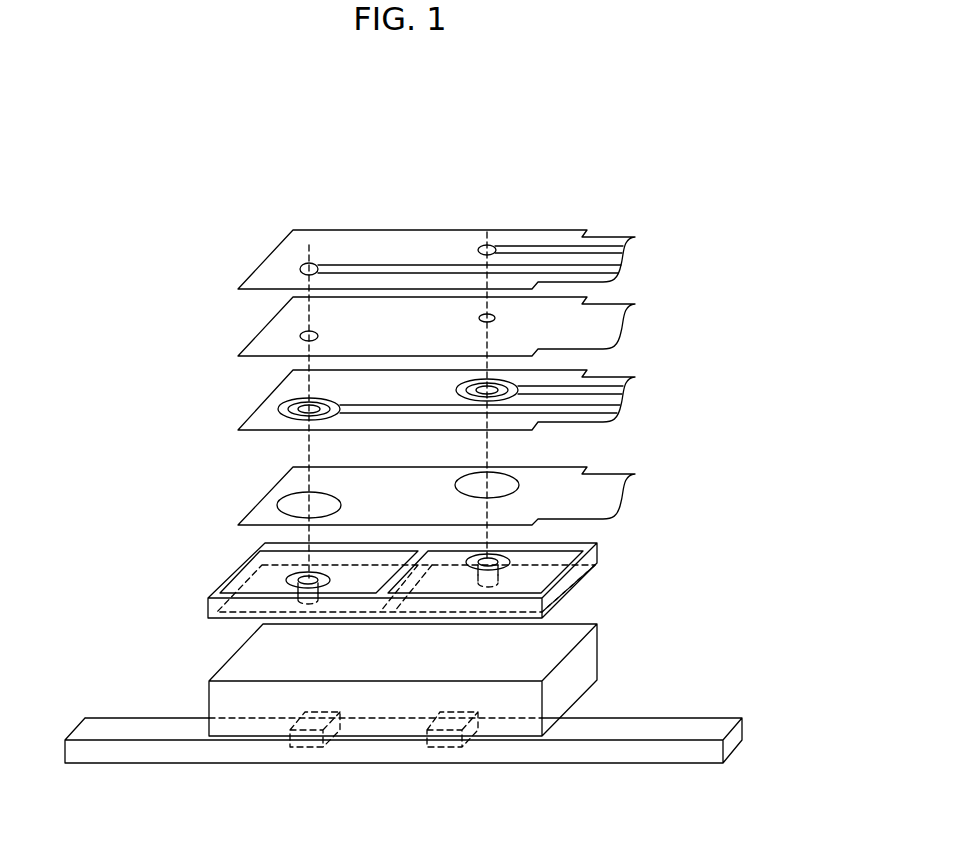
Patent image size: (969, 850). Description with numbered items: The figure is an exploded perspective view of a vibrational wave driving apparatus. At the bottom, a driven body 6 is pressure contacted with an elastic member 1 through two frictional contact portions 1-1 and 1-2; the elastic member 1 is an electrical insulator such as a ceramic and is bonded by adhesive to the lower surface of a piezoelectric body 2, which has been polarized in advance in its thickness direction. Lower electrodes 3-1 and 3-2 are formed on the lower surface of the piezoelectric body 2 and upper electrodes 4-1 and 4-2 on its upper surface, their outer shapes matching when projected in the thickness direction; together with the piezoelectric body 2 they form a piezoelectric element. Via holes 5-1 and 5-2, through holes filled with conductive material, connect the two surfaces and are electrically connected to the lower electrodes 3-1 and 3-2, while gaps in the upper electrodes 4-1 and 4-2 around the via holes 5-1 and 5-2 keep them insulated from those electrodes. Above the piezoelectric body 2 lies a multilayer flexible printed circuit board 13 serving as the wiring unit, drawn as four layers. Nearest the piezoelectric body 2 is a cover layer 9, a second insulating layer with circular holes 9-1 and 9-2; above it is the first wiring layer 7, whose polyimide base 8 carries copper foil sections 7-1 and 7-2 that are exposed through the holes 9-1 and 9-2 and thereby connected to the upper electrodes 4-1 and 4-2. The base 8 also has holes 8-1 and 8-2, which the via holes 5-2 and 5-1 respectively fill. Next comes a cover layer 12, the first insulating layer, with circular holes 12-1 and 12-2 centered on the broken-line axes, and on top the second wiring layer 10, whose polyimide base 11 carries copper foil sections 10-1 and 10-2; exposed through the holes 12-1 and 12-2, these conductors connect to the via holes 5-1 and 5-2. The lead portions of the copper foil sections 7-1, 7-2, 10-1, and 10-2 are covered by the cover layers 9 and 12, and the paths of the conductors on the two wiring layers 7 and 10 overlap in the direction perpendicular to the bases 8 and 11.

The elastic member 1 is at (583, 666).
The frictional contact portion 1-1 is at (436, 747).
The frictional contact portion 1-2 is at (298, 747).
The piezoelectric body 2 is at (211, 601).
The lower electrode 3-1 is at (566, 582).
The lower electrode 3-2 is at (229, 614).
The upper electrode 4-1 is at (557, 558).
The upper electrode 4-2 is at (267, 578).
The via hole 5-1 is at (497, 558).
The via hole 5-2 is at (298, 575).
The driven body 6 is at (177, 763).
The first wiring layer 7 is at (647, 372).
The first conductor (copper foil section) 7-1 is at (503, 384).
The first conductor (copper foil section) 7-2 is at (307, 409).
The base 8 is at (268, 417).
The hole 8-1 is at (296, 404).
The hole 8-2 is at (496, 392).
The cover layer (second insulating layer) 9 is at (267, 513).
The circular hole 9-1 is at (295, 503).
The circular hole 9-2 is at (517, 487).
The second wiring layer 10 is at (647, 230).
The second conductor (copper foil section) 10-1 is at (492, 246).
The second conductor (copper foil section) 10-2 is at (307, 266).
The base 11 is at (267, 275).
The cover layer (first insulating layer) 12 is at (267, 343).
The circular hole 12-1 is at (306, 333).
The circular hole 12-2 is at (496, 318).
The multilayer flexible printed circuit board (wiring unit) 13 is at (719, 228).